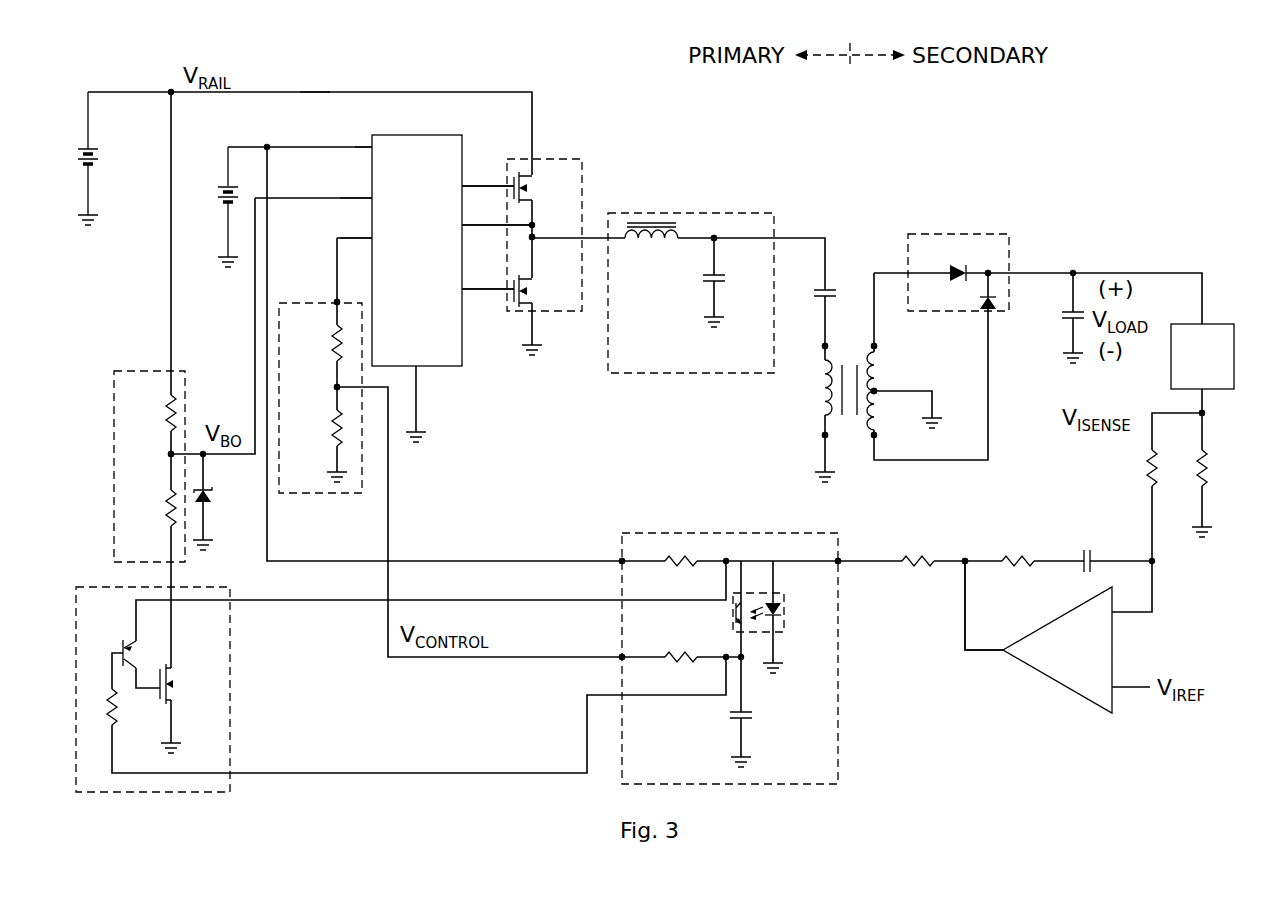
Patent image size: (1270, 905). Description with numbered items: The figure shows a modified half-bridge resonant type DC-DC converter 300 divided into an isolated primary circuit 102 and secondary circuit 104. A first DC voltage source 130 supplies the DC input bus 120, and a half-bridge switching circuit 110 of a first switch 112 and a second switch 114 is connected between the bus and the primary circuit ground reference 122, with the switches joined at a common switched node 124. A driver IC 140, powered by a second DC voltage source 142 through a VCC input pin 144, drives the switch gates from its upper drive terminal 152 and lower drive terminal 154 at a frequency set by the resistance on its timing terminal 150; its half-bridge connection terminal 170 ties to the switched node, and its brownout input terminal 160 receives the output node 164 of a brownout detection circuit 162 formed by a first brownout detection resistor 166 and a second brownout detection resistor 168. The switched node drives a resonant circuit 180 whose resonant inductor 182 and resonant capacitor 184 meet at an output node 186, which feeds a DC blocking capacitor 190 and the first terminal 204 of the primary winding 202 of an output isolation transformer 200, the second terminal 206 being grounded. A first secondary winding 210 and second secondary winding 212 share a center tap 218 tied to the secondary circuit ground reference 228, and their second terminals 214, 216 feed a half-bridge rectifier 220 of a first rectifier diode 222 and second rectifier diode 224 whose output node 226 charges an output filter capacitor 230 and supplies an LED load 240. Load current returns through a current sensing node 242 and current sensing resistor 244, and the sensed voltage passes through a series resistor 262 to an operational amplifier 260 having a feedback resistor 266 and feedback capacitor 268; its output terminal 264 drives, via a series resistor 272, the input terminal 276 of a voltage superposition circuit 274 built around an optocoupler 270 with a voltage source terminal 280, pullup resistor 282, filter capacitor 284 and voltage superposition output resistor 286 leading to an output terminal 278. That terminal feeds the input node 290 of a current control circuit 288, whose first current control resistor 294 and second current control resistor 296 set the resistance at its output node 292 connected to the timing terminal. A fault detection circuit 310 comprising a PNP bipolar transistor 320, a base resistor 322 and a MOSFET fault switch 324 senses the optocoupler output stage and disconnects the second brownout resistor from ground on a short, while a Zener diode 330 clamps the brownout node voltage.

The primary circuit 102 is at (777, 147).
The secondary circuit 104 is at (922, 147).
The half-bridge switching circuit 110 is at (548, 220).
The first switch 112 is at (532, 192).
The second switch 114 is at (532, 291).
The DC input bus 120 is at (307, 91).
The primary circuit ground reference 122 is at (90, 213).
The common switched node 124 is at (535, 236).
The first DC voltage source 130 is at (88, 147).
The driver IC 140 is at (390, 135).
The second DC voltage source 142 is at (228, 186).
The VCC input pin 144 is at (370, 146).
The timing terminal 150 is at (370, 237).
The upper drive terminal 152 is at (470, 185).
The lower drive terminal 154 is at (470, 292).
The brownout input terminal 160 is at (370, 197).
The brownout detection circuit 162 is at (131, 452).
The output node 164 is at (169, 452).
The first brownout detection resistor 166 is at (168, 410).
The second brownout detection resistor 168 is at (168, 505).
The half-bridge connection terminal 170 is at (470, 228).
The resonant circuit 180 is at (691, 279).
The resonant inductor 182 is at (642, 240).
The resonant capacitor 184 is at (717, 282).
The output node 186 is at (717, 242).
The DC blocking capacitor 190 is at (830, 290).
The output isolation transformer 200 is at (868, 405).
The primary winding 202 is at (823, 390).
The first terminal 204 is at (823, 345).
The second terminal 206 is at (823, 434).
The first secondary winding 210 is at (876, 372).
The second secondary winding 212 is at (876, 412).
The second terminal 214 is at (875, 345).
The second terminal 216 is at (876, 436).
The center tap 218 is at (876, 390).
The half-bridge rectifier 220 is at (980, 271).
The first rectifier diode 222 is at (945, 273).
The second rectifier diode 224 is at (986, 311).
The output node 226 is at (990, 271).
The secondary circuit ground reference 228 is at (934, 417).
The output filter capacitor 230 is at (1071, 313).
The load 240 is at (1212, 322).
The current sensing node 242 is at (1205, 414).
The current sensing resistor 244 is at (1206, 462).
The operational amplifier 260 is at (1058, 682).
The series resistor 262 is at (1146, 466).
The output terminal 264 is at (1003, 650).
The feedback resistor 266 is at (1030, 566).
The feedback capacitor 268 is at (1084, 560).
The optocoupler 270 is at (776, 612).
The series resistor 272 is at (930, 558).
The voltage superposition circuit 274 is at (706, 645).
The input terminal 276 is at (840, 564).
The output terminal 278 is at (620, 656).
The voltage source terminal 280 is at (620, 564).
The pullup resistor 282 is at (690, 566).
The filter capacitor 284 is at (739, 716).
The voltage superposition output resistor 286 is at (690, 655).
The current control circuit 288 is at (332, 397).
The input node 290 is at (335, 385).
The output node 292 is at (335, 300).
The first current control resistor 294 is at (334, 343).
The second current control resistor 296 is at (334, 432).
The modified half-bridge resonant type DC-DC converter 300 is at (1114, 196).
The fault detection circuit 310 is at (161, 706).
The PNP bipolar transistor 320 is at (124, 646).
The base resistor 322 is at (115, 712).
The MOSFET fault switch 324 is at (172, 690).
The Zener diode 330 is at (206, 503).